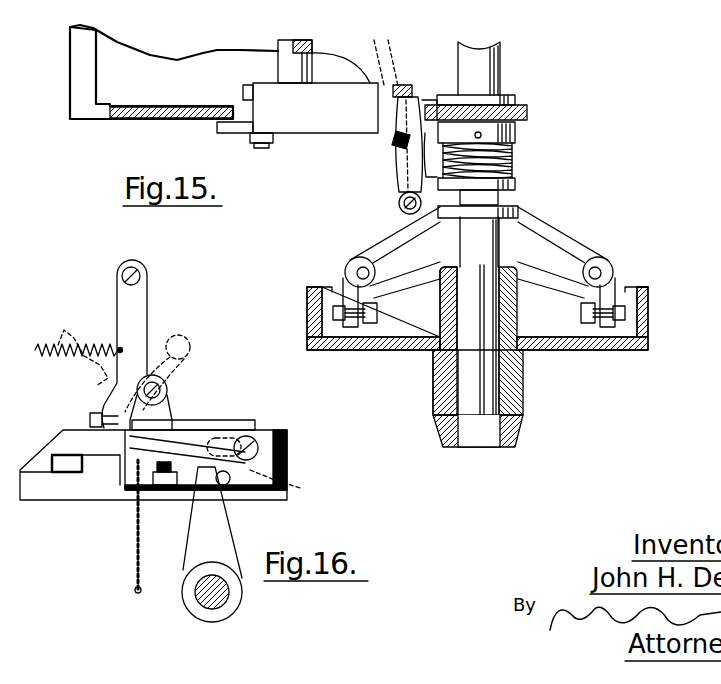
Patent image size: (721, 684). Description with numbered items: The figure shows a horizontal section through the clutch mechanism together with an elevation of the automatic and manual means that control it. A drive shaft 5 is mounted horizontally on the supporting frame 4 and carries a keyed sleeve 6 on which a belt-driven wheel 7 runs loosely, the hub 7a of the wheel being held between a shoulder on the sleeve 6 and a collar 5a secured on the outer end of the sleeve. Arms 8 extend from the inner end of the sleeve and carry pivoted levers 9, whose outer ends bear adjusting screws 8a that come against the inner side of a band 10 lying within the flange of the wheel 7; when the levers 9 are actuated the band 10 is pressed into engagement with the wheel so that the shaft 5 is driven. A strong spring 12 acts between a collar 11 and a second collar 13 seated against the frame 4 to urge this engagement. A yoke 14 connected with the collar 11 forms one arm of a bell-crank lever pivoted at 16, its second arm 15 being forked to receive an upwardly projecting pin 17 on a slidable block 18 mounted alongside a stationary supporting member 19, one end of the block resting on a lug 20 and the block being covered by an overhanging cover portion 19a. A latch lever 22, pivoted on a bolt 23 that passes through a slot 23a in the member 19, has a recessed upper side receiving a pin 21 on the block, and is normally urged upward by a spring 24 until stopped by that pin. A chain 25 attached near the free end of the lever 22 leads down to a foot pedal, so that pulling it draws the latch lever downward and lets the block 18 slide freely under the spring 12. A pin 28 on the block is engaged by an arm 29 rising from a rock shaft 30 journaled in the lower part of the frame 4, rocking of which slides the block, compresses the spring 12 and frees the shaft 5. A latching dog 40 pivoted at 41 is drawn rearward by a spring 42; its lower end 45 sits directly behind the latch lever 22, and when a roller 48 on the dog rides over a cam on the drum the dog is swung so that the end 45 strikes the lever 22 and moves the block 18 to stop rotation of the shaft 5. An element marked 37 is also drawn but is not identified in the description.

In FIG. 15, the supporting frame 4 is at (148, 117).
In FIG. 15, the drive shaft 5 is at (494, 78).
In FIG. 15, the collar 5a is at (448, 430).
In FIG. 15, the sleeve 6 is at (446, 357).
In FIG. 15, the wheel 7 is at (560, 347).
In FIG. 15, the hub 7a is at (520, 385).
In FIG. 15, the arms 8 is at (413, 294).
In FIG. 15, the adjusting screws 8a is at (368, 326).
In FIG. 15, the levers 9 is at (383, 256).
In FIG. 15, the band 10 is at (640, 306).
In FIG. 15, the collar 11 is at (518, 212).
In FIG. 15, the spring 12 is at (515, 160).
In FIG. 15, the second collar 13 is at (520, 135).
In FIG. 15, the yoke 14 is at (438, 218).
In FIG. 15, the second arm 15 is at (403, 160).
In FIG. 16, the second arm 15 is at (90, 417).
In FIG. 15, the pivot 16 is at (399, 205).
In FIG. 15, the pin 17 is at (397, 128).
In FIG. 16, the pin 17 is at (183, 395).
In FIG. 15, the block 18 is at (243, 93).
In FIG. 16, the block 18 is at (262, 470).
In FIG. 15, the supporting member 19 is at (235, 133).
In FIG. 16, the supporting member 19 is at (108, 492).
In FIG. 15, the cover portion 19a is at (330, 90).
In FIG. 16, the cover portion 19a is at (212, 426).
In FIG. 16, the lug 20 is at (63, 472).
In FIG. 16, the pin 21 is at (164, 425).
In FIG. 15, the latch lever 22 is at (390, 46).
In FIG. 16, the latch lever 22 is at (200, 462).
In FIG. 15, the bolt 23 is at (262, 150).
In FIG. 16, the bolt 23 is at (256, 445).
In FIG. 16, the slot 23a is at (298, 488).
In FIG. 16, the spring 24 is at (137, 495).
In FIG. 16, the chain 25 is at (135, 573).
In FIG. 16, the pin 28 is at (228, 485).
In FIG. 16, the arm 29 is at (195, 546).
In FIG. 16, the rock shaft 30 is at (210, 608).
In FIG. 15, the post 37 is at (293, 47).
In FIG. 16, the latching dog 40 is at (143, 318).
In FIG. 16, the pivot 41 is at (141, 275).
In FIG. 16, the spring 42 is at (62, 352).
In FIG. 15, the lower end of dog 45 is at (401, 84).
In FIG. 16, the lower end of dog 45 is at (118, 438).
In FIG. 16, the roller 48 is at (167, 386).